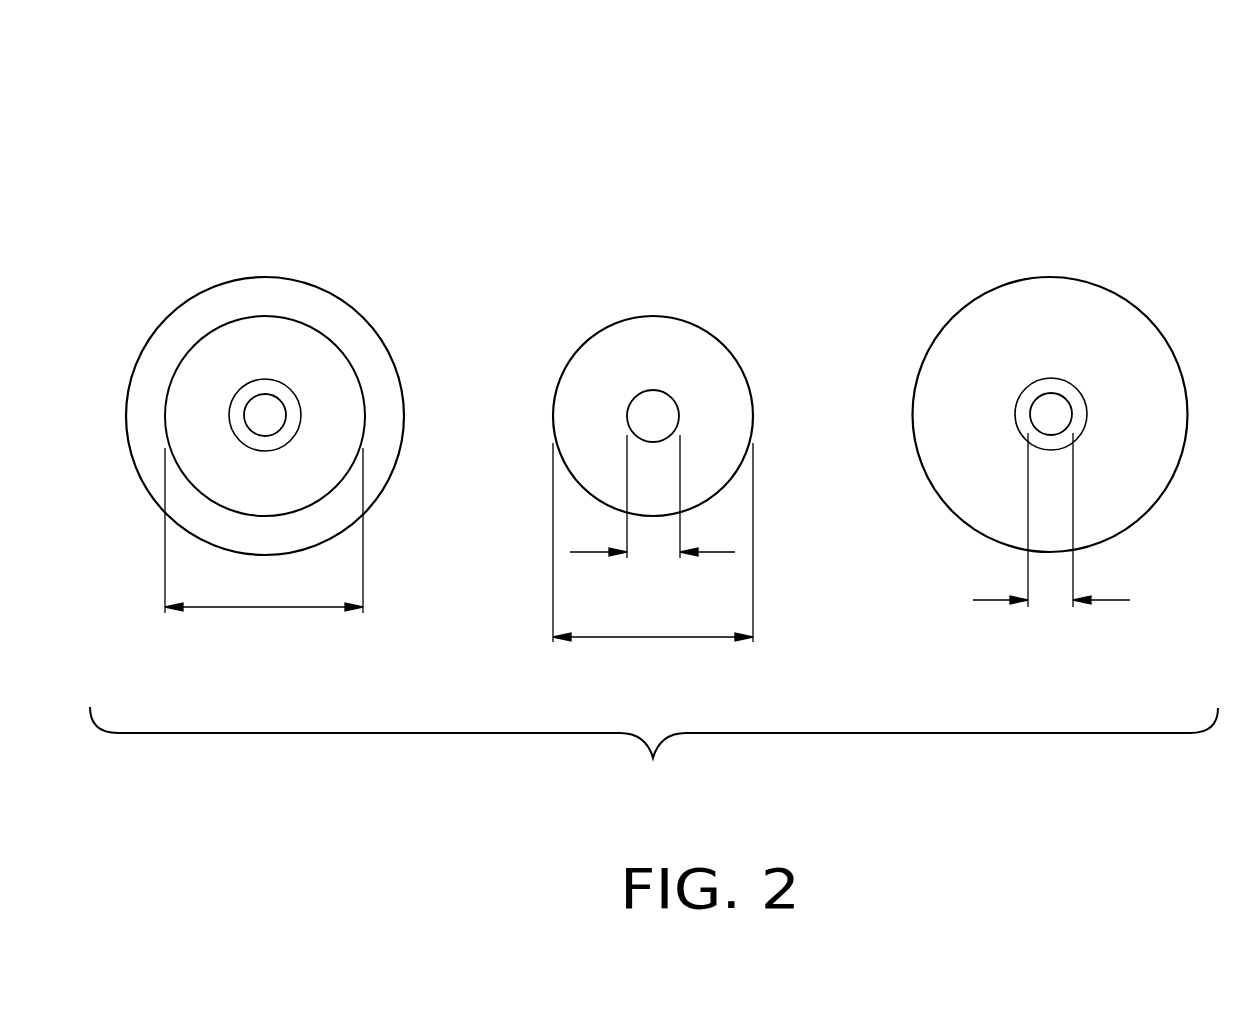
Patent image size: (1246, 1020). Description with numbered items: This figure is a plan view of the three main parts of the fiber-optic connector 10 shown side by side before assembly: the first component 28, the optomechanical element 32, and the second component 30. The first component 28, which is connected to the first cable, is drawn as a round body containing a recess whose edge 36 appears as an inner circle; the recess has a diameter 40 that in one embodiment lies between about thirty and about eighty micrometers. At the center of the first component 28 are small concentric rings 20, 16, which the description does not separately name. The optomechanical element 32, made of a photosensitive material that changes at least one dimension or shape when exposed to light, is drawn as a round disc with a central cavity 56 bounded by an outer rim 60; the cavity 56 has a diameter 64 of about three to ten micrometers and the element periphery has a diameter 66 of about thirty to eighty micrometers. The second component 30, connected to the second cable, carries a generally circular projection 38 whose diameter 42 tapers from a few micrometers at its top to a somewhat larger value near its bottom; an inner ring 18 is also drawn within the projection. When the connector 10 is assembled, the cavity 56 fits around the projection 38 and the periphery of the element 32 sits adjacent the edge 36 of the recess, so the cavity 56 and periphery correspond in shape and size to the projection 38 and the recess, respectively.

The connector 10 is at (913, 102).
The inner lumen of first tubular member 16 is at (227, 408).
The inner lumen of second tubular member 18 is at (1087, 415).
The inner tubular member 20 is at (253, 395).
The first component 28 is at (260, 277).
The second component 30 is at (1060, 277).
The optomechanical element 32 is at (677, 315).
The edge 36 is at (346, 359).
The projection 38 is at (1052, 395).
The diameter of the recess 40 is at (248, 608).
The diameter of the projection 42 is at (1115, 602).
The cavity 56 is at (678, 410).
The outer rim 60 is at (638, 388).
The diameter of the cavity 64 is at (723, 553).
The diameter of the periphery 66 is at (620, 637).